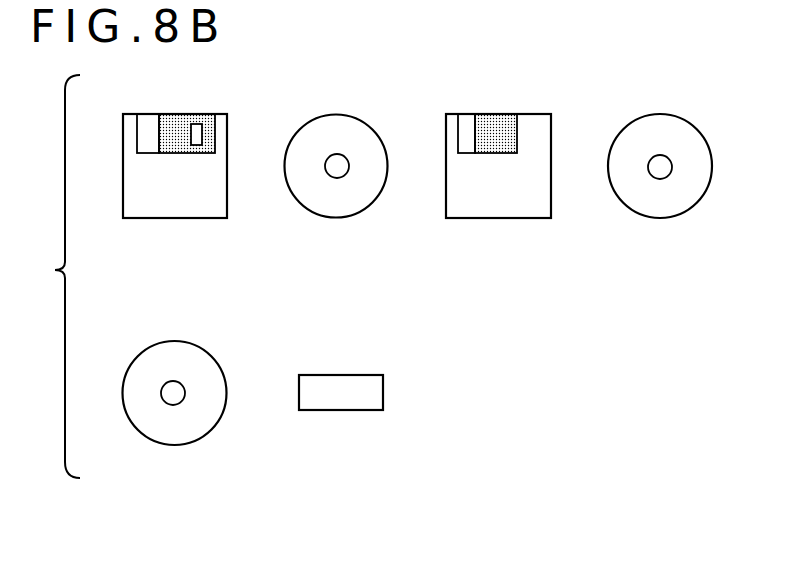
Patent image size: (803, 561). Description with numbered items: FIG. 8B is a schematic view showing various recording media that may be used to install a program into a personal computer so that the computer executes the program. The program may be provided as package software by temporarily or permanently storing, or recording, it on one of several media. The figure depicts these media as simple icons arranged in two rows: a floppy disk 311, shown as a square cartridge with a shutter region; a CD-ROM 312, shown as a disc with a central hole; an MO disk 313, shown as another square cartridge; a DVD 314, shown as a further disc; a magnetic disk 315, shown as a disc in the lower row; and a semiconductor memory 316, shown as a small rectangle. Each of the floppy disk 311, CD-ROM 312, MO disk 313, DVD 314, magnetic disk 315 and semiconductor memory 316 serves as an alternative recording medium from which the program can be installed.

The floppy disk 311 is at (177, 218).
The CD-ROM 312 is at (333, 217).
The MO disk 313 is at (495, 218).
The DVD 314 is at (657, 218).
The magnetic disk 315 is at (167, 445).
The semiconductor memory 316 is at (332, 410).